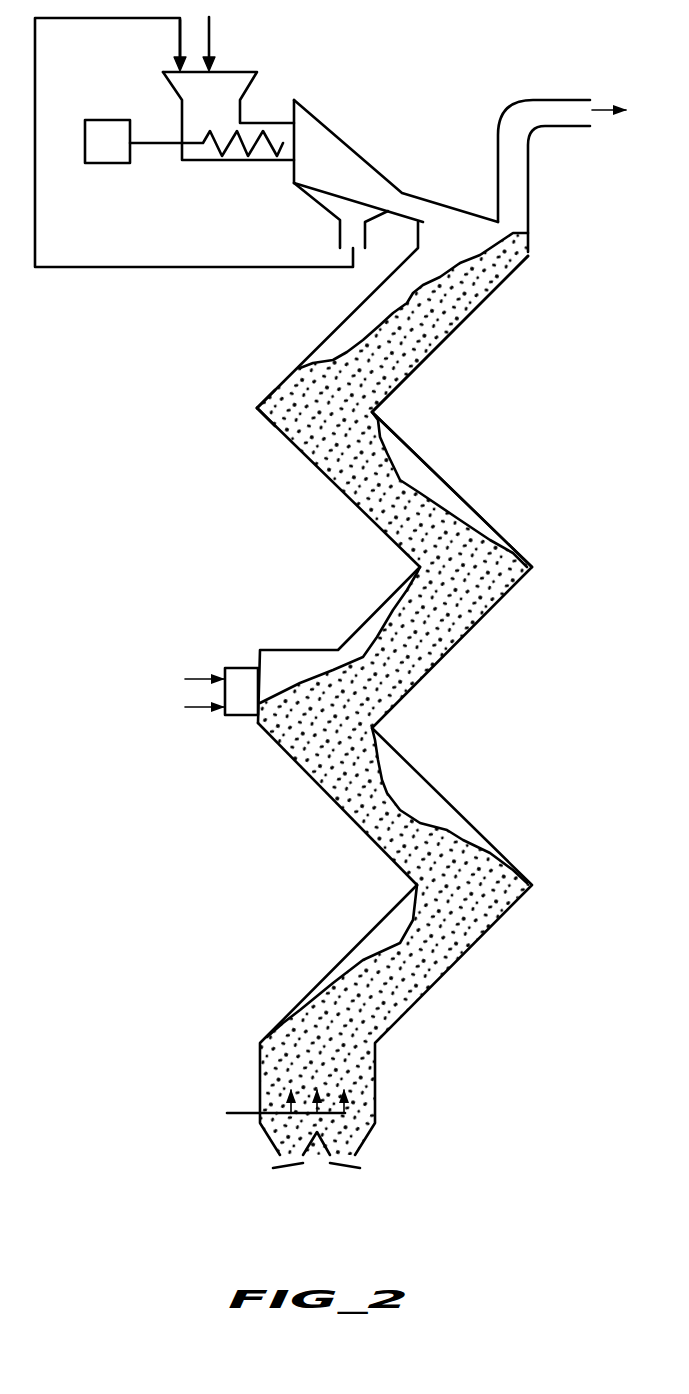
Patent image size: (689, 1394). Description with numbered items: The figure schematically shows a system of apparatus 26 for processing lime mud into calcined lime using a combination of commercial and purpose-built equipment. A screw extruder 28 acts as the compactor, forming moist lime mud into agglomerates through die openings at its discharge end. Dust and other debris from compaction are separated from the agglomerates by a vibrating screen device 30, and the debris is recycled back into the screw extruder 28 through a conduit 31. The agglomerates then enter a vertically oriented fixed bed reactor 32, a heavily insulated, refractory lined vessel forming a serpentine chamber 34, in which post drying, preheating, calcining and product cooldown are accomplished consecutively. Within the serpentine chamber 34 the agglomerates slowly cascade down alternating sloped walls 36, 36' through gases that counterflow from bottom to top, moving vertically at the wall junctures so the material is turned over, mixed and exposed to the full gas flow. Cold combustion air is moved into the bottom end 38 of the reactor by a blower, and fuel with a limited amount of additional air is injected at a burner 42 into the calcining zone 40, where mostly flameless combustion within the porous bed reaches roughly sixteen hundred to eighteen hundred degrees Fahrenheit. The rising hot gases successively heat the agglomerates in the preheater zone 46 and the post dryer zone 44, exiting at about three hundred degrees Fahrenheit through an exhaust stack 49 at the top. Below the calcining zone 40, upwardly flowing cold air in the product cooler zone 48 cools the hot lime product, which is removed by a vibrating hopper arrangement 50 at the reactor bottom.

The system of apparatus 26 is at (165, 913).
The screw extruder 28 is at (208, 162).
The vibrating screen device 30 is at (356, 154).
The conduit 31 is at (146, 268).
The vertical oriented fixed bed reactor 32 is at (254, 408).
The serpentine chamber 34 is at (297, 772).
The sloped wall 36 is at (323, 315).
The sloped wall 36' is at (324, 487).
The bottom end 38 is at (272, 1158).
The calcining zone 40 is at (495, 577).
The burner 42 is at (238, 668).
The post dryer zone 44 is at (422, 322).
The preheater zone 46 is at (323, 433).
The product cooler zone 48 is at (380, 793).
The exhaust stack 49 is at (545, 99).
The vibrating hopper arrangement 50 is at (345, 1168).